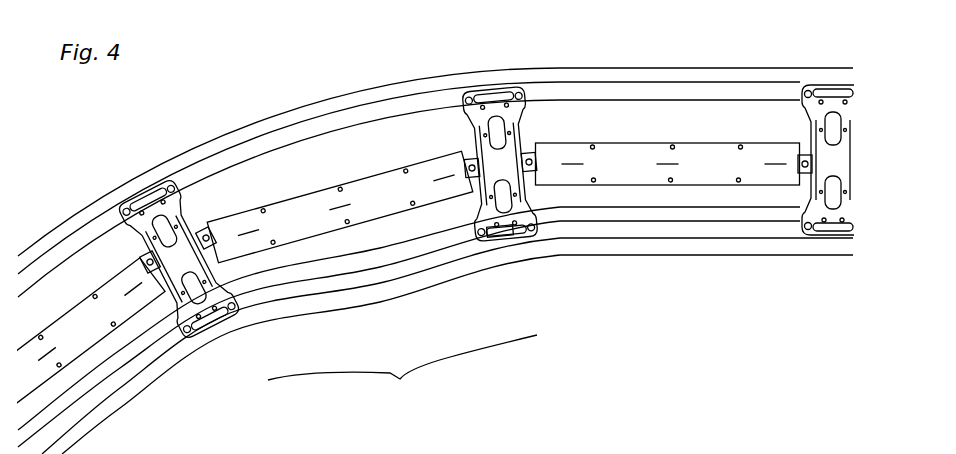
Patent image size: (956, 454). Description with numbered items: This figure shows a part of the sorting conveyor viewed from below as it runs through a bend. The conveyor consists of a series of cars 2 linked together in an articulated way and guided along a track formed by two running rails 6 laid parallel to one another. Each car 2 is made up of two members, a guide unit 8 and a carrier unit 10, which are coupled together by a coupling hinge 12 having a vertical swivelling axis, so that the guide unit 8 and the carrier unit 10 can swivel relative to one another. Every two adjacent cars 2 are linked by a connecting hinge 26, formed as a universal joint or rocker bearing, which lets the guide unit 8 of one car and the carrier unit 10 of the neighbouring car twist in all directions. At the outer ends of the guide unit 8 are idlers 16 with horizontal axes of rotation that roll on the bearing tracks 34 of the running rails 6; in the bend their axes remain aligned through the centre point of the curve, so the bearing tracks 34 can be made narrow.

The car 2 is at (402, 375).
The running rail 6 is at (622, 247).
The guide unit 8 is at (500, 224).
The carrier unit 10 is at (373, 205).
The coupling hinge 12 is at (462, 160).
The idler 16 is at (500, 242).
The connecting hinge 26 is at (534, 150).
The bearing track 34 is at (640, 92).